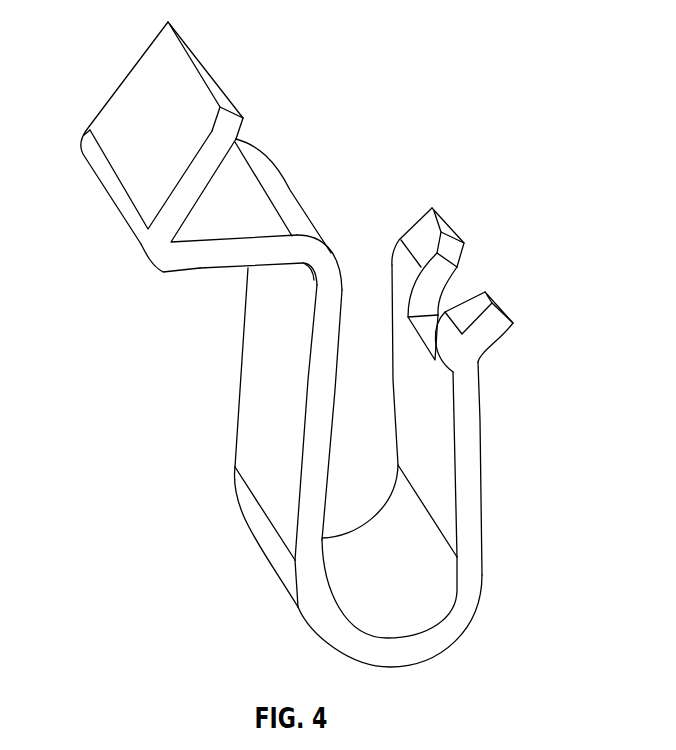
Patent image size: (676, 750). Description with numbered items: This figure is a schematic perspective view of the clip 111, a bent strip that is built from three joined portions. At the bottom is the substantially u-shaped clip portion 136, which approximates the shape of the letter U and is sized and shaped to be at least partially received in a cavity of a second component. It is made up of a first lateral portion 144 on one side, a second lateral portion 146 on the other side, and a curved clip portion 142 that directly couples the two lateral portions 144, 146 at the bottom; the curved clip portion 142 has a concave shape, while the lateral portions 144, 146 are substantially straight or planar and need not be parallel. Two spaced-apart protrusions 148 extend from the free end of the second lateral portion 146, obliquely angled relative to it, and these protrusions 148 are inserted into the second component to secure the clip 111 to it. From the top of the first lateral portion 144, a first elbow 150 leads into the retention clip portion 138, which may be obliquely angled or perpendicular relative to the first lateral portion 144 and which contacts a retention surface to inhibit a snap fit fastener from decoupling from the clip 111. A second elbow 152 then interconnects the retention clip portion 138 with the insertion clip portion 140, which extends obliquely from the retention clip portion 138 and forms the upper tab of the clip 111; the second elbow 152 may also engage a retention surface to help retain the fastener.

The clip 111 is at (280, 182).
The substantially u-shaped clip portion 136 is at (303, 615).
The retention clip portion 138 is at (240, 257).
The insertion clip portion 140 is at (128, 100).
The curved clip portion 142 is at (413, 653).
The first lateral portion 144 is at (254, 391).
The second lateral portion 146 is at (473, 467).
The protrusion 148 is at (421, 233).
The first elbow 150 is at (332, 258).
The second elbow 152 is at (167, 258).